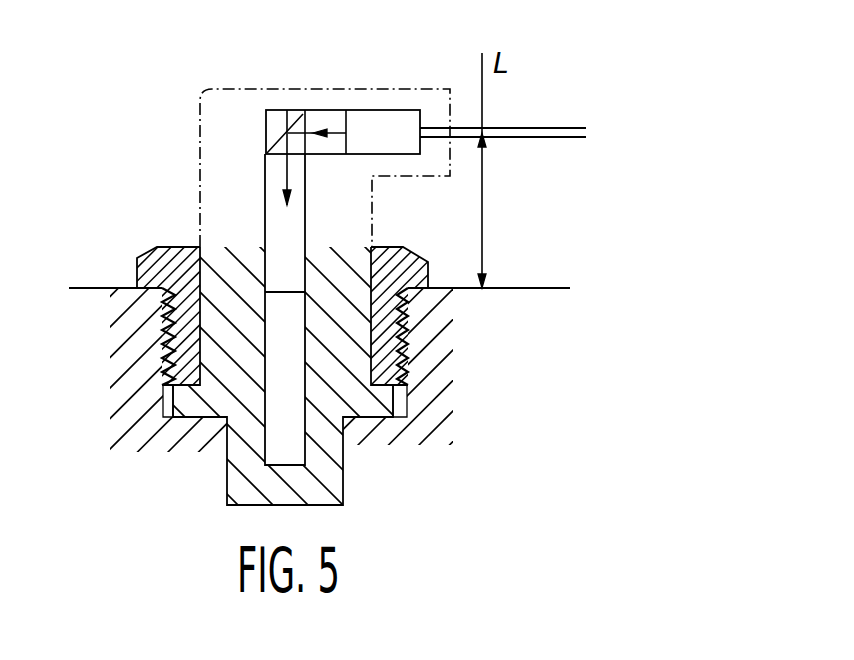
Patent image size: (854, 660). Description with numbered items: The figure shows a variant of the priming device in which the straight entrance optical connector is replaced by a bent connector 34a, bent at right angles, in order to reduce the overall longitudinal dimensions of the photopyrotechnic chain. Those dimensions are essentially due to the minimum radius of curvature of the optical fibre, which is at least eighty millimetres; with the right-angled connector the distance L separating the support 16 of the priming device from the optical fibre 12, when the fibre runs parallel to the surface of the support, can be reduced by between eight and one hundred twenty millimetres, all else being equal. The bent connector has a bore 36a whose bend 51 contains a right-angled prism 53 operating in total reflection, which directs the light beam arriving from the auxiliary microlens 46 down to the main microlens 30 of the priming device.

The optical fibre 12 is at (558, 128).
The support 16 is at (532, 288).
The main microlens 30 is at (278, 229).
The bent connector 34a is at (194, 165).
The bore 36a is at (380, 134).
The auxiliary microlens 46 is at (309, 123).
The bend 51 is at (267, 128).
The right-angled prism 53 is at (294, 133).